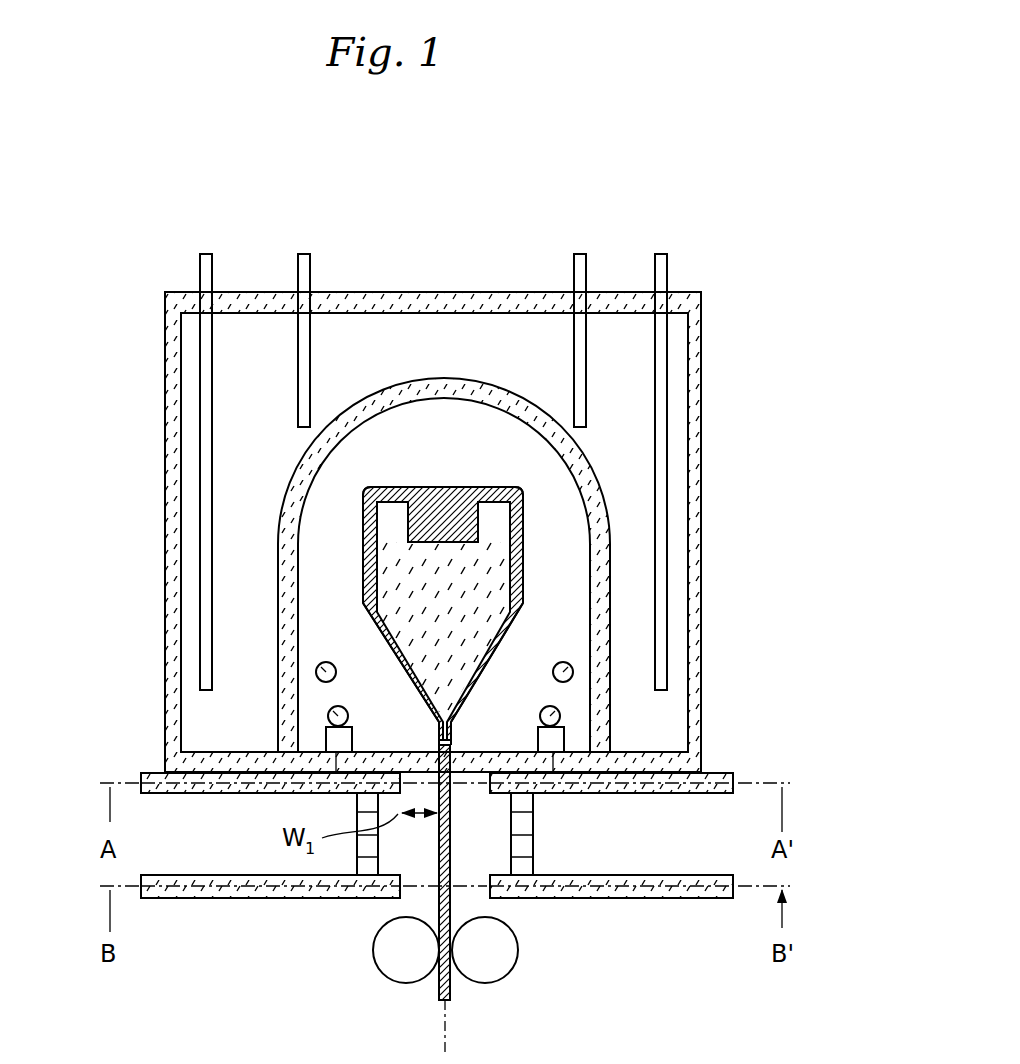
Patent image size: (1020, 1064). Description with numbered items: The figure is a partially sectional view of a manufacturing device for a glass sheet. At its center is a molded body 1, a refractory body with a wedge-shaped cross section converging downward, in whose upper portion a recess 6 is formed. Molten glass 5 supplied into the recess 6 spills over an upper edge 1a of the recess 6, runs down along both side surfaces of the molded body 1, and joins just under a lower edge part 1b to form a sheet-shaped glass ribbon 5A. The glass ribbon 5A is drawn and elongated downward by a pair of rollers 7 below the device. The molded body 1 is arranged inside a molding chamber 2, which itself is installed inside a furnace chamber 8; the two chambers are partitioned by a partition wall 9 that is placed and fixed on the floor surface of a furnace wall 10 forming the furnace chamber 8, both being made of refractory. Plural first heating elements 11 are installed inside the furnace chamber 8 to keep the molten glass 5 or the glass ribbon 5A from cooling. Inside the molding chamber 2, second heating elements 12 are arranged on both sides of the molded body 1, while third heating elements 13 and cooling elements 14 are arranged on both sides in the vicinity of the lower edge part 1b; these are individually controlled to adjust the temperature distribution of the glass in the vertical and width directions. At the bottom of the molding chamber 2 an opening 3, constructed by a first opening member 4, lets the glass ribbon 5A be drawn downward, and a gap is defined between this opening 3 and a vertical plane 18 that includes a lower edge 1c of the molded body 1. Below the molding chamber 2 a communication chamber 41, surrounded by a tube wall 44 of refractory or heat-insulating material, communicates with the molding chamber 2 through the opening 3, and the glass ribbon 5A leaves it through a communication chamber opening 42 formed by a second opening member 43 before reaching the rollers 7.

The molded body 1 is at (583, 568).
The upper edge of the recess 1a is at (522, 492).
The lower edge part 1b is at (450, 688).
The lower edge 1c is at (452, 716).
The molding chamber 2 is at (551, 492).
The opening of the molding chamber 3 is at (416, 773).
The first opening member 4 is at (150, 773).
The molten glass 5 is at (363, 527).
The glass ribbon 5A is at (451, 877).
The recess 6 is at (427, 527).
The rollers 7 is at (394, 953).
The furnace chamber 8 is at (605, 346).
The partition wall 9 is at (487, 388).
The furnace wall 10 is at (703, 353).
The first heating elements 11 is at (304, 254).
The second heating elements 12 is at (321, 667).
The third heating elements 13 is at (333, 711).
The cooling elements 14 is at (326, 746).
The vertical plane 18 is at (446, 1030).
The communication chamber 41 is at (480, 849).
The communication chamber opening 42 is at (424, 899).
The second opening member 43 is at (197, 899).
The tube wall 44 is at (525, 826).